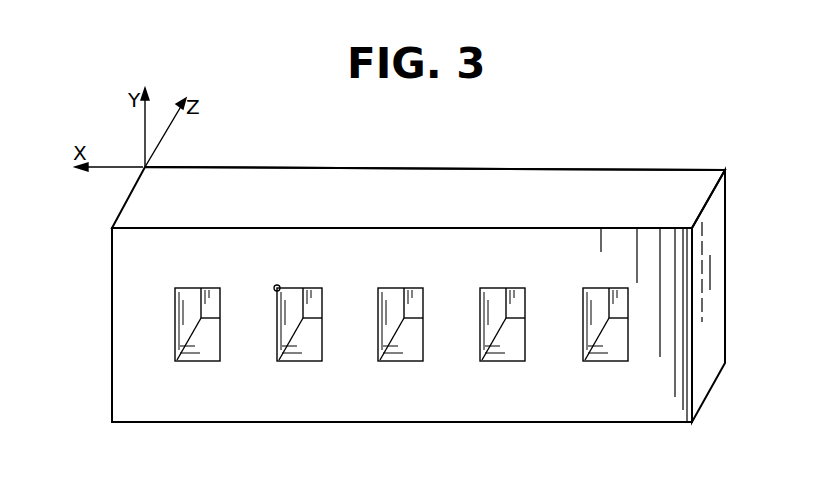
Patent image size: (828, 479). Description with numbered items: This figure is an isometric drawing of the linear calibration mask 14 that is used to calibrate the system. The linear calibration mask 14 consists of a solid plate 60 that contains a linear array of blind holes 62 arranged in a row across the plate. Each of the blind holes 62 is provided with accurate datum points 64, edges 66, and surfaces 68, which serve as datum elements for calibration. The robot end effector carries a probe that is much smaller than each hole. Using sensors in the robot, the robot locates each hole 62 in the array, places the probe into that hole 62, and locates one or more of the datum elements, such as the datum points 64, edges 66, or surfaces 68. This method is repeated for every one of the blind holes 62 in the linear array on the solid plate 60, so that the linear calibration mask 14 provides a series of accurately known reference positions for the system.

The linear calibration mask 14 is at (612, 154).
The solid plate 60 is at (323, 166).
The blind holes 62 is at (297, 370).
The datum points 64 is at (271, 270).
The edges 66 is at (423, 340).
The surfaces 68 is at (558, 402).